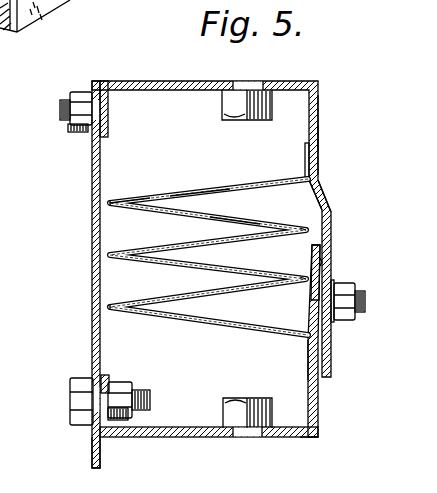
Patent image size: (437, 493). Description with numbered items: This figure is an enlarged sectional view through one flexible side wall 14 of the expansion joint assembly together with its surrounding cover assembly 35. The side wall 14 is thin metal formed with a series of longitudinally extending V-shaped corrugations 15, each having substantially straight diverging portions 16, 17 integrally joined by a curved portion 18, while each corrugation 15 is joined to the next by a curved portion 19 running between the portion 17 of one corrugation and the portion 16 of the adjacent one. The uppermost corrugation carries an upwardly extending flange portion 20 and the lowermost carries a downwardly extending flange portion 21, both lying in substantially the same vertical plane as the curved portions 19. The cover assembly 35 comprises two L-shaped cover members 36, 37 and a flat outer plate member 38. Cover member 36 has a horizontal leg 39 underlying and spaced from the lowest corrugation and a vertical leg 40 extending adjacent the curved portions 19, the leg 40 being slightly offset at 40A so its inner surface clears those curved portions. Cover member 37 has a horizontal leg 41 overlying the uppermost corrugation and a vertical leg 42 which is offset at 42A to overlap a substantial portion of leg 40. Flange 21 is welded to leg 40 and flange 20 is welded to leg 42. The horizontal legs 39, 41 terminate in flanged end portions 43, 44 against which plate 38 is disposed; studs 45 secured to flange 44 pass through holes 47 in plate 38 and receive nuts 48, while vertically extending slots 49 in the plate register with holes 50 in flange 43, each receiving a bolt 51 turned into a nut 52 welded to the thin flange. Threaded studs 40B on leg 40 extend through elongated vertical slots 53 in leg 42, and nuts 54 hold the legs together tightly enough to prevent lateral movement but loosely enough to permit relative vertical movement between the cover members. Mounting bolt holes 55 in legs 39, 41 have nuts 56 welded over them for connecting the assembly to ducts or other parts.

The side wall 14 is at (112, 279).
The V-shaped corrugation 15 is at (149, 197).
The diverging portion 16 is at (195, 190).
The diverging portion 17 is at (215, 215).
The curved portion 18 is at (104, 253).
The curved portion 19 is at (308, 231).
The flange portion 20 is at (309, 158).
The flange portion 21 is at (308, 355).
The cover assembly 35 is at (326, 87).
The cover member 36 is at (285, 437).
The cover member 37 is at (318, 138).
The outer plate member 38 is at (93, 338).
The horizontal leg 39 is at (190, 438).
The vertical leg 40 is at (320, 402).
The offset 40A is at (313, 304).
The threaded stud 40B is at (362, 312).
The horizontal leg 41 is at (178, 81).
The vertical leg 42 is at (318, 118).
The offset 42A is at (330, 198).
The flanged end portion 43 is at (108, 378).
The flanged end portion 44 is at (103, 124).
The stud 45 is at (62, 110).
The hole 47 is at (88, 127).
The nut 48 is at (70, 129).
The slot 49 is at (92, 365).
The hole 50 is at (82, 0).
The bolt 51 is at (72, 400).
The nut 52 is at (130, 385).
The slot 53 is at (322, 271).
The nut 54 is at (336, 325).
The mounting bolt hole 55 is at (256, 80).
The nut 56 is at (222, 118).